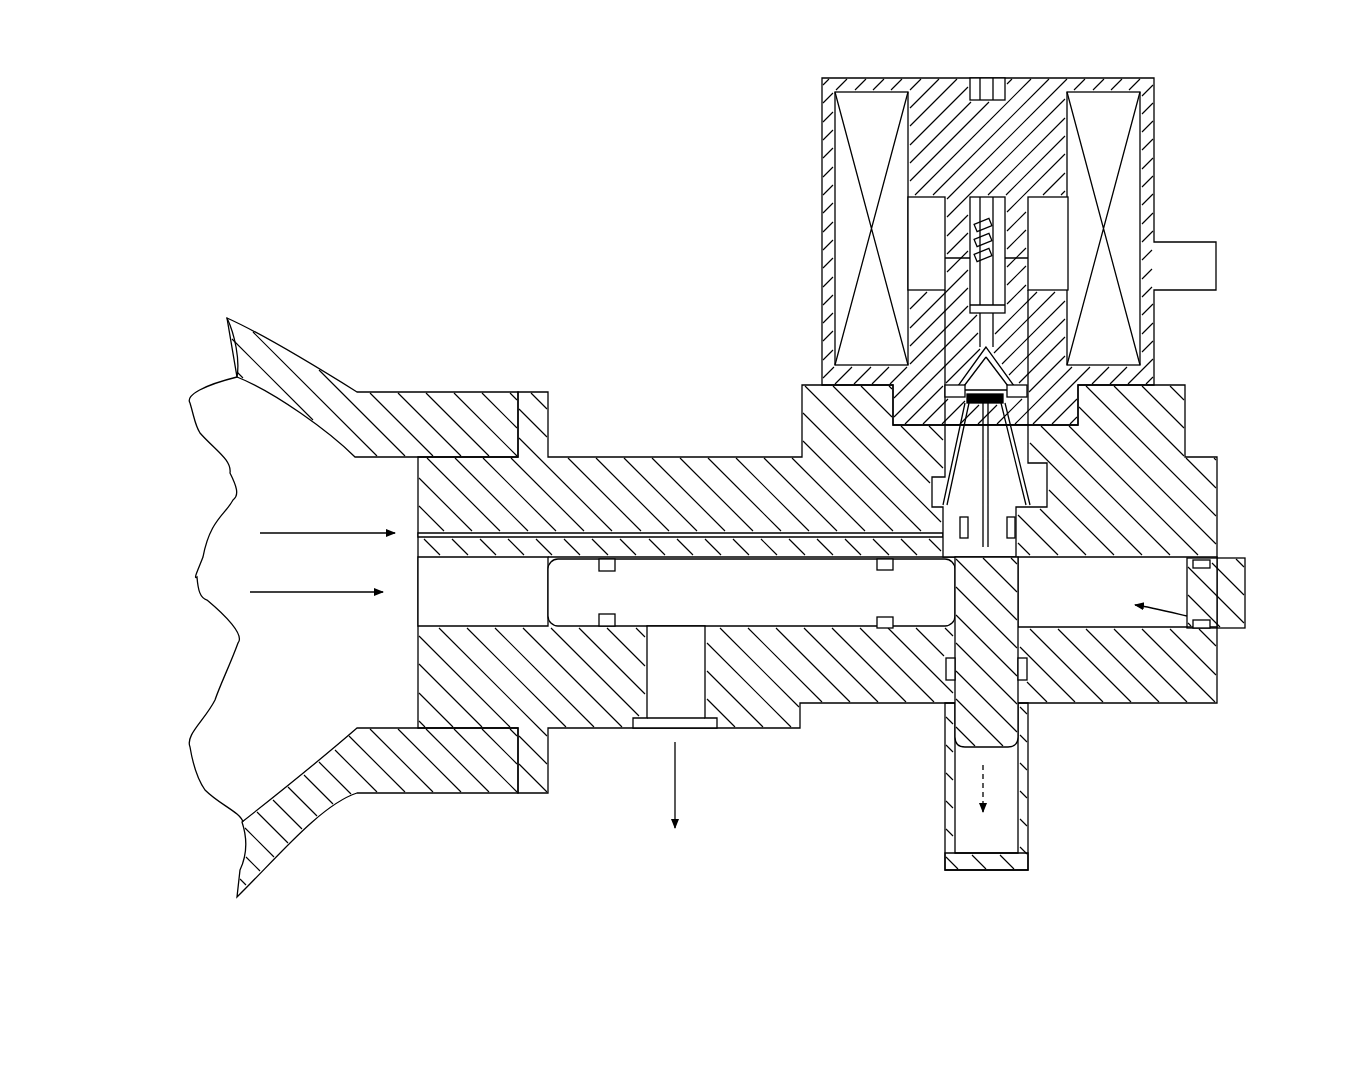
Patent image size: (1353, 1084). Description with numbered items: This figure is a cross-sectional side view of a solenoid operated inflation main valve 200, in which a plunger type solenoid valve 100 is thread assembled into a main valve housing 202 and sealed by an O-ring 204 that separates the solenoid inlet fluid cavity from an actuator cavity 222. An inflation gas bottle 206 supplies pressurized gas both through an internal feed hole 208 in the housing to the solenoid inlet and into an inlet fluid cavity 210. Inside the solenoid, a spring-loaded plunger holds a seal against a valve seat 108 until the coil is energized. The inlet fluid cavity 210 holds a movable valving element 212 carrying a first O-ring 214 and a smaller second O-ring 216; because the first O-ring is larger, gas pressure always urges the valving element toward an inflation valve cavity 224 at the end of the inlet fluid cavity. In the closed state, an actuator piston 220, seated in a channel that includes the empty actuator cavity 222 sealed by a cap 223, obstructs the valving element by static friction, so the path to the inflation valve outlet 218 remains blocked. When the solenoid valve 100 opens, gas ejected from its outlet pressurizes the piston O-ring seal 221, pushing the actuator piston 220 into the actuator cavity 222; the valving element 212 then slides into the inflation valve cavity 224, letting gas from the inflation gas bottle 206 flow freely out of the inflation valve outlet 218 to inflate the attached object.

The plunger type solenoid valve 100 is at (1205, 162).
The valve seat 108 is at (1015, 395).
The solenoid operated inflation main valve 200 is at (352, 181).
The main valve housing 202 is at (787, 457).
The O-ring 204 is at (1013, 528).
The inflation gas bottle 206 is at (160, 557).
The internal feed hole 208 is at (563, 527).
The inlet fluid cavity 210 is at (482, 630).
The valving element 212 is at (758, 557).
The first O-ring 214 is at (607, 633).
The second O-ring 216 is at (887, 628).
The inflation valve outlet 218 is at (655, 730).
The actuator piston 220 is at (1012, 714).
The O-ring seal 221 is at (1023, 668).
The actuator cavity 222 is at (1008, 820).
The cap 223 is at (945, 858).
The inflation valve cavity 224 is at (1187, 613).